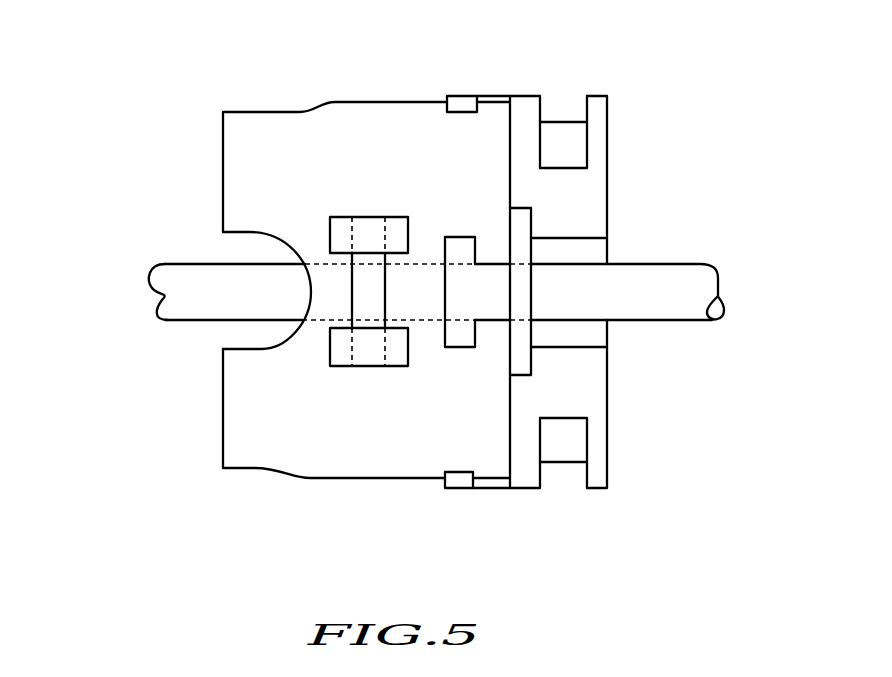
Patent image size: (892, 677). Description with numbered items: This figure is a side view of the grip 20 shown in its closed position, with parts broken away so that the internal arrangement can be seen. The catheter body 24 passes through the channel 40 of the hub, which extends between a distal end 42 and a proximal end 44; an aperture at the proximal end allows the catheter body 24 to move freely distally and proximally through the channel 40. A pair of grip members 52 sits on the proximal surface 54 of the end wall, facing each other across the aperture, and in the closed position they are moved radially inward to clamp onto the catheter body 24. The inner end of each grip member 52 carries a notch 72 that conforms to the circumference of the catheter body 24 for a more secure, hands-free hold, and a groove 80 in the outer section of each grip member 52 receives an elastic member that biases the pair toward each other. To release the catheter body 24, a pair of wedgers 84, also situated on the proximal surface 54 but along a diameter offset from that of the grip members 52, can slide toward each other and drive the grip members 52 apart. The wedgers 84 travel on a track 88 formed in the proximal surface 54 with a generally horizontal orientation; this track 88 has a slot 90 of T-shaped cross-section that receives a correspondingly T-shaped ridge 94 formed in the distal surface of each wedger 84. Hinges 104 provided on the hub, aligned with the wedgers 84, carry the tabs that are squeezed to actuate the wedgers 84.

The grip 20 is at (248, 540).
The catheter body 24 is at (670, 287).
The channel 40 is at (238, 337).
The distal end 42 is at (223, 162).
The proximal end 44 is at (510, 128).
The grip members 52 is at (577, 190).
The proximal surface 54 is at (510, 162).
The notch 72 is at (607, 240).
The groove 80 is at (563, 107).
The wedgers 84 is at (513, 295).
The track 88 is at (445, 337).
The slot 90 is at (445, 283).
The ridge 94 is at (458, 310).
The hinges 104 is at (370, 277).